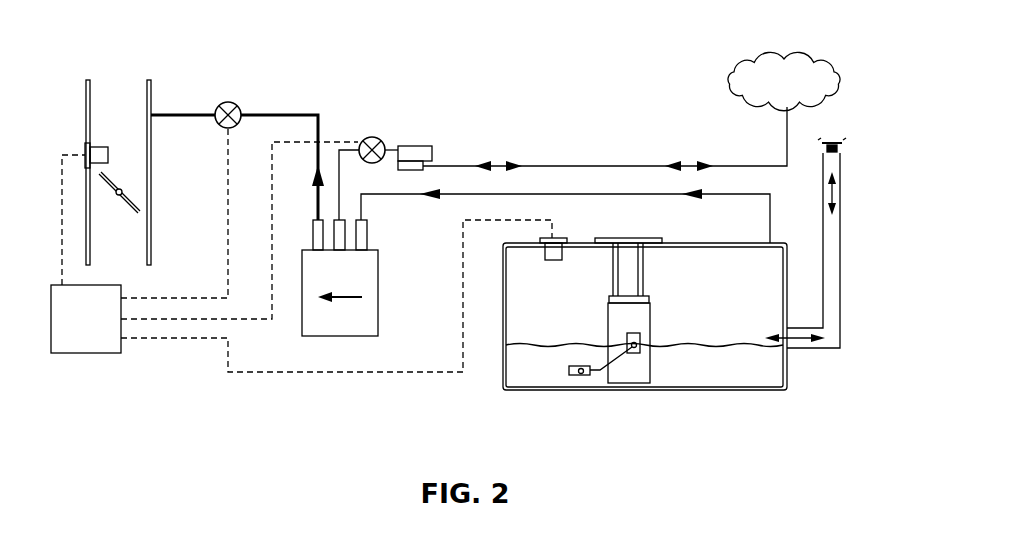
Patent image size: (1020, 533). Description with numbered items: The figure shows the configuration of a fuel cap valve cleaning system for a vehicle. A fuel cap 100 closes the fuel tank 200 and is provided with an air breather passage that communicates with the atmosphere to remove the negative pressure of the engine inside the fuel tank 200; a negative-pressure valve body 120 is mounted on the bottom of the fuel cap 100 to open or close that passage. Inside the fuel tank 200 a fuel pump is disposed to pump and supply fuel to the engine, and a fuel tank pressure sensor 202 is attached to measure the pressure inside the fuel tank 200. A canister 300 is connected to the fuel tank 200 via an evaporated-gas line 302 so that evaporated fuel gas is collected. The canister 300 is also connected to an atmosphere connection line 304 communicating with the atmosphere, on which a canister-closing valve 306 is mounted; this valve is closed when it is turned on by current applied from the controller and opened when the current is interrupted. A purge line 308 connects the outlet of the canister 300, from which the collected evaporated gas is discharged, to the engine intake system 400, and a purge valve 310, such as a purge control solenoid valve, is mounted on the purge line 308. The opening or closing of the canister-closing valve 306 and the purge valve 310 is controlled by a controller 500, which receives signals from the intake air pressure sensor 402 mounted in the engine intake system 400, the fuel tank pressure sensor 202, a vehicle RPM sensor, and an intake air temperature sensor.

The fuel cap 100 is at (847, 108).
The negative-pressure valve body 120 is at (838, 157).
The fuel tank 200 is at (595, 390).
The fuel tank pressure sensor 202 is at (560, 237).
The canister 300 is at (336, 346).
The evaporated-gas line 302 is at (450, 197).
The atmosphere connection line 304 is at (562, 165).
The canister-closing valve 306 is at (372, 137).
The purge line 308 is at (290, 112).
The purge valve 310 is at (220, 100).
The engine intake system 400 is at (135, 160).
The intake air pressure sensor 402 is at (100, 150).
The controller 500 is at (80, 355).